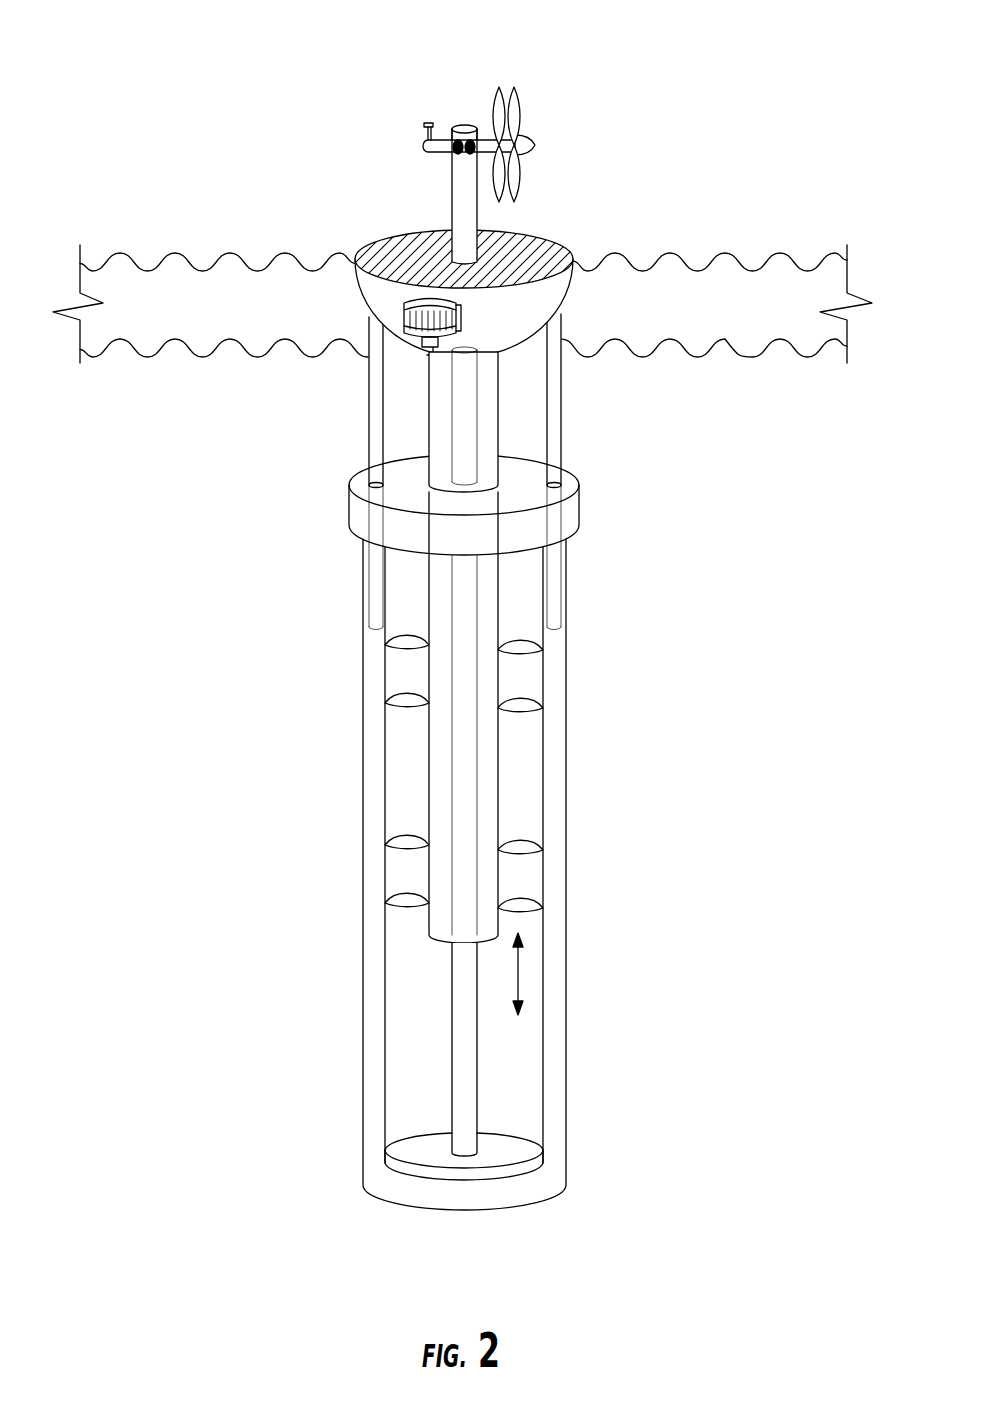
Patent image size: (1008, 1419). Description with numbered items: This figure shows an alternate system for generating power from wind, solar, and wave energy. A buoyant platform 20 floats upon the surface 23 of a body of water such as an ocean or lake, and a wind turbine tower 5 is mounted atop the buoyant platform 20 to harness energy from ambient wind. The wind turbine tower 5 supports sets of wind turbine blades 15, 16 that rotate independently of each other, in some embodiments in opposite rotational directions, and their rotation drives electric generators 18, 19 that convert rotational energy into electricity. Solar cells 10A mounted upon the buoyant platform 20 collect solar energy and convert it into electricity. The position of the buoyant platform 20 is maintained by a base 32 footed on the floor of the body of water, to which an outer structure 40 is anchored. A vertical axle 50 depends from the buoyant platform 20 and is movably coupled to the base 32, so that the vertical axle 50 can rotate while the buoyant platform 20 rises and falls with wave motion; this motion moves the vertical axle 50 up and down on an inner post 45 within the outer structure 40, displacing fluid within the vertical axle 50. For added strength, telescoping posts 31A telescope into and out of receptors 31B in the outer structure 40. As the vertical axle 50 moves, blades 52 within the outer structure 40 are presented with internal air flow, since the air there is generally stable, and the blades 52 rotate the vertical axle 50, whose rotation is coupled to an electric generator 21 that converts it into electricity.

The wind turbine tower 5 is at (452, 197).
The solar cells 10A is at (542, 238).
The wind turbine blades 15 is at (527, 105).
The wind turbine blades 16 is at (494, 104).
The electric generator 18 is at (455, 140).
The electric generator 19 is at (467, 139).
The buoyant platform 20 is at (573, 287).
The electric generator 21 is at (402, 318).
The surface of a body of water 23 is at (778, 253).
The telescoping posts 31A is at (560, 425).
The receptors 31B is at (577, 516).
The base 32 is at (517, 1182).
The outer structure 40 is at (566, 787).
The inner post 45 is at (480, 1077).
The vertical axle 50 is at (430, 372).
The blades 52 is at (544, 646).